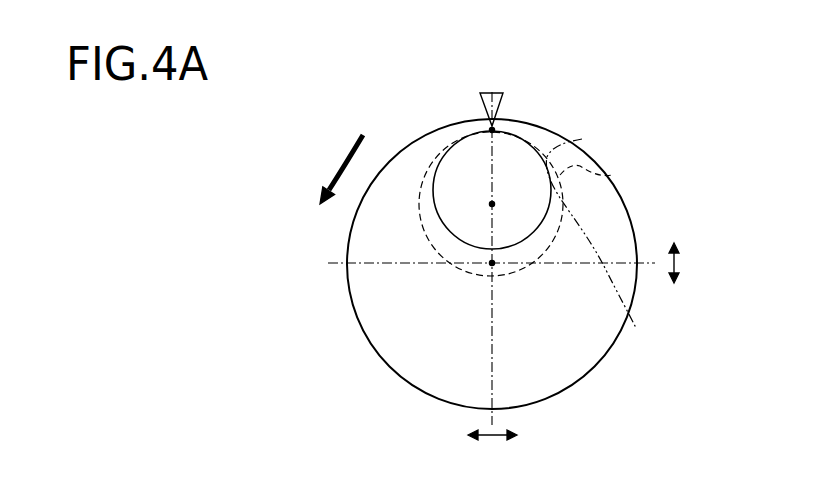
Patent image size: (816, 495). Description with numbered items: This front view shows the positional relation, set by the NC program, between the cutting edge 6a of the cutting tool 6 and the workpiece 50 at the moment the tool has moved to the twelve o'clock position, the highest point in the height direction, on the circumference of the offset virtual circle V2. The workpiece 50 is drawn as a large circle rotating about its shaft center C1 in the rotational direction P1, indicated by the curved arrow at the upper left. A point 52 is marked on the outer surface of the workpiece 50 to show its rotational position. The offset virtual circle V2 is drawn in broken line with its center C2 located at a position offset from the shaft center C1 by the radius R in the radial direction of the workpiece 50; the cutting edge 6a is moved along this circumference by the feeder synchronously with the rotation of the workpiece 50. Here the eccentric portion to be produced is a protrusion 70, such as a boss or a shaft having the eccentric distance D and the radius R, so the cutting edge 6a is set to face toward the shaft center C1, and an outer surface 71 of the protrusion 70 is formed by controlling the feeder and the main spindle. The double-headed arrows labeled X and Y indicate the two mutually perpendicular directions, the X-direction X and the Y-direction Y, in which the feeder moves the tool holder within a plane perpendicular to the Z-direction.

The cutting tool 6 is at (492, 92).
The cutting edge 6a is at (492, 130).
The workpiece 50 is at (633, 215).
The point on the outer surface of the workpiece 52 is at (500, 124).
The protrusion 70 is at (516, 175).
The outer surface of the protrusion 71 is at (635, 327).
The offset virtual circle V2 is at (612, 175).
The shaft center of the workpiece C1 is at (492, 263).
The center of the offset virtual circle C2 is at (492, 204).
The rotational direction P1 is at (342, 163).
The X-direction X is at (492, 438).
The Y-direction Y is at (680, 264).